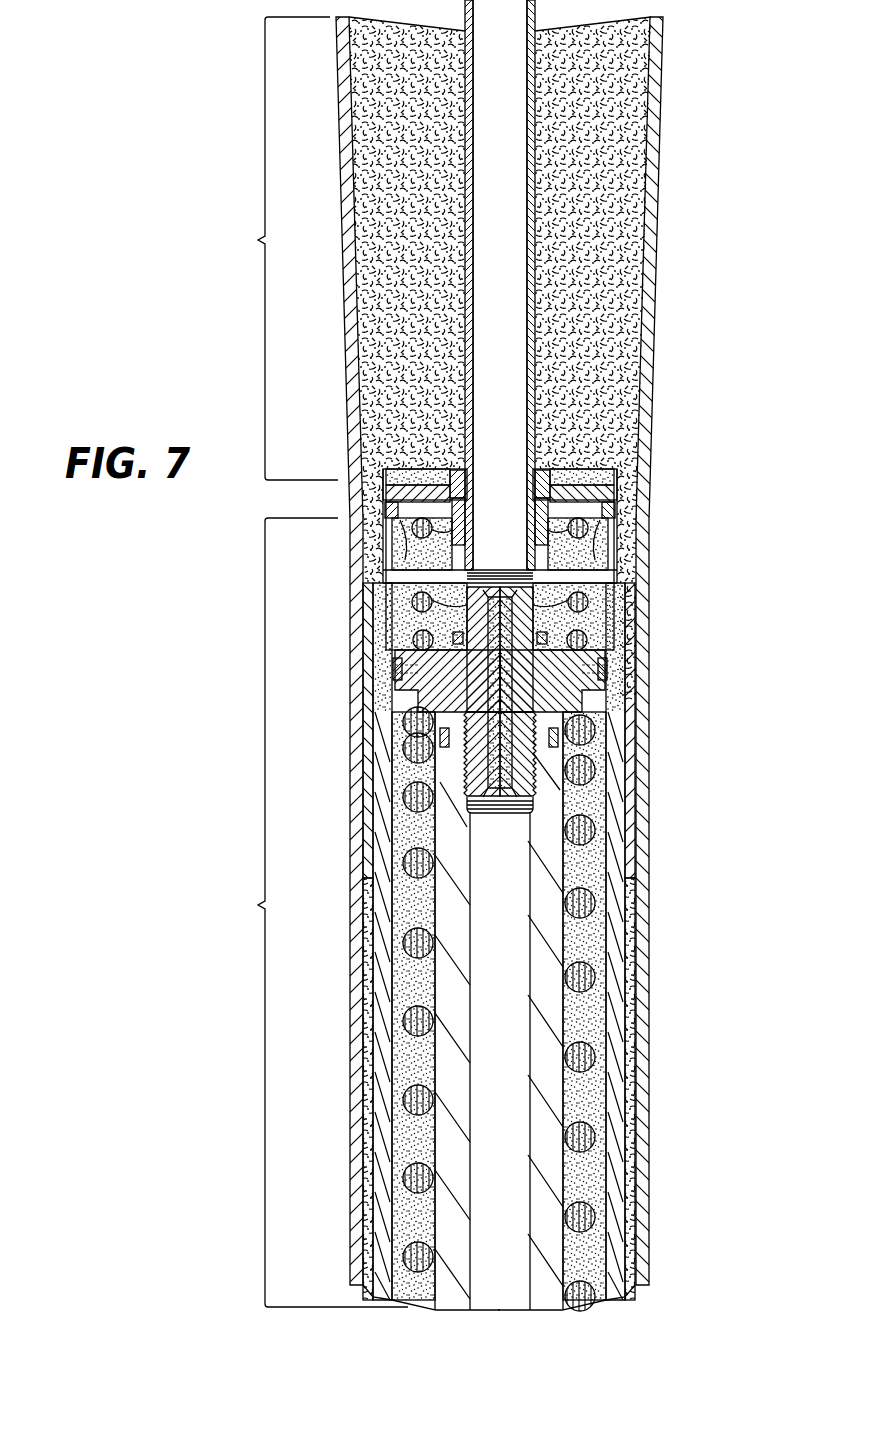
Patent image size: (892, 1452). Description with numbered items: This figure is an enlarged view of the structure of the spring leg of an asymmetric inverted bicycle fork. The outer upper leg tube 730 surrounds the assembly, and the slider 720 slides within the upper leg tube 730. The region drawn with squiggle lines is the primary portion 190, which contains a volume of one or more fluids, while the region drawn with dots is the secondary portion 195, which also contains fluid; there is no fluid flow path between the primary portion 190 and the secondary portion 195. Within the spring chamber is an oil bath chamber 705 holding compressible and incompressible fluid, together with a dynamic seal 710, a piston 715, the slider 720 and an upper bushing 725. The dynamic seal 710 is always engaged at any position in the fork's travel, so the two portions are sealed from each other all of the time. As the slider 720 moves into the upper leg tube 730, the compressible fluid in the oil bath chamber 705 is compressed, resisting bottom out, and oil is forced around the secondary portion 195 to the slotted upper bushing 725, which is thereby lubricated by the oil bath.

The primary portion 190 is at (276, 248).
The secondary portion 195 is at (311, 912).
The oil bath chamber 705 is at (630, 113).
The dynamic seal 710 is at (548, 458).
The piston 715 is at (605, 492).
The slider 720 is at (613, 548).
The upper bushing 725 is at (625, 798).
The upper leg tube 730 is at (340, 258).